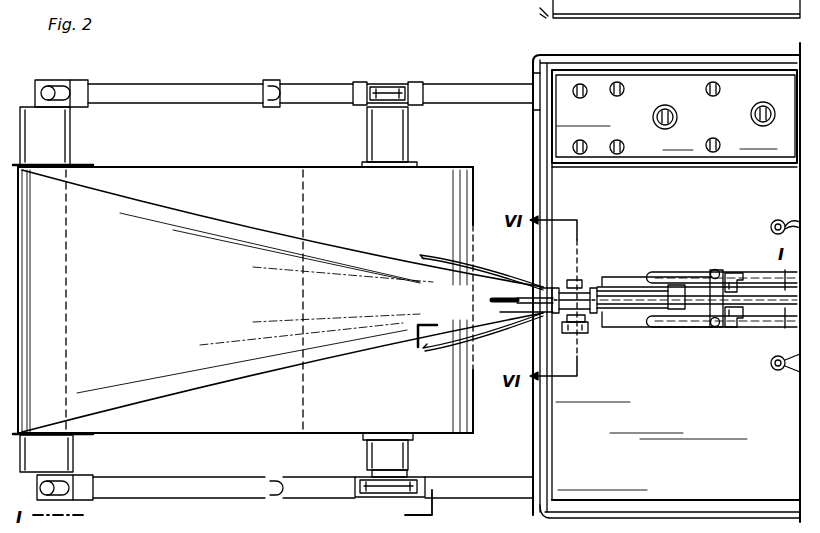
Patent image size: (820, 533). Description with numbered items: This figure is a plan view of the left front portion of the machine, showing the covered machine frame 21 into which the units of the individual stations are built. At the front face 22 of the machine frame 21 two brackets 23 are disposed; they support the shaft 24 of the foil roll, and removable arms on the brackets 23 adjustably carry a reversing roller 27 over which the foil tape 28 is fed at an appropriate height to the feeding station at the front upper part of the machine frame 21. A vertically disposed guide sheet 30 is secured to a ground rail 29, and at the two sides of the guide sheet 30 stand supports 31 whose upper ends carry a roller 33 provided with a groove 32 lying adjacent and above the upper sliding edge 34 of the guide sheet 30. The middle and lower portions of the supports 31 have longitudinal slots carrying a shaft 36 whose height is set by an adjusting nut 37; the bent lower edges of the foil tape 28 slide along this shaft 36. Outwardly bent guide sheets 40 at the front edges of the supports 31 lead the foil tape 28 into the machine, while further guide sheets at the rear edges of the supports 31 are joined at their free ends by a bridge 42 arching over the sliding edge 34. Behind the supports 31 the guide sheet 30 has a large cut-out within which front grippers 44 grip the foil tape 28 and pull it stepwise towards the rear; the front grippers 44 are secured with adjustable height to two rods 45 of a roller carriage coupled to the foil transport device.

The machine frame 21 is at (656, 0).
The front face 22 is at (670, 9).
The bracket 23 is at (475, 93).
The shaft 24 is at (372, 108).
The reversing roller 27 is at (66, 218).
The foil tape 28 is at (350, 258).
The ground rail 29 is at (618, 280).
The guide sheet 30 is at (492, 303).
The support 31 is at (588, 288).
The groove 32 is at (586, 316).
The roller 33 is at (557, 290).
The upper sliding edge 34 is at (628, 302).
The shaft 36 is at (574, 280).
The adjusting nut 37 is at (580, 330).
The guide sheet 40 is at (490, 282).
The bridge 42 is at (672, 285).
The front gripper 44 is at (733, 272).
The rod 45 is at (711, 270).